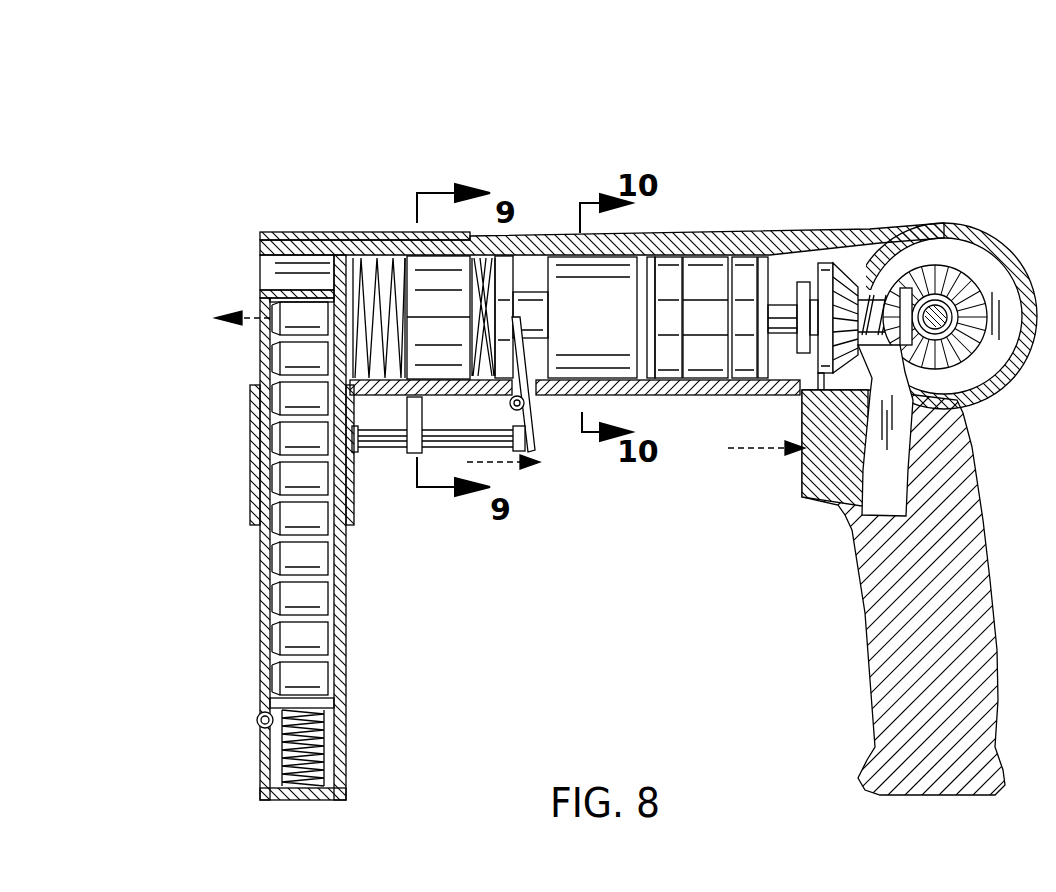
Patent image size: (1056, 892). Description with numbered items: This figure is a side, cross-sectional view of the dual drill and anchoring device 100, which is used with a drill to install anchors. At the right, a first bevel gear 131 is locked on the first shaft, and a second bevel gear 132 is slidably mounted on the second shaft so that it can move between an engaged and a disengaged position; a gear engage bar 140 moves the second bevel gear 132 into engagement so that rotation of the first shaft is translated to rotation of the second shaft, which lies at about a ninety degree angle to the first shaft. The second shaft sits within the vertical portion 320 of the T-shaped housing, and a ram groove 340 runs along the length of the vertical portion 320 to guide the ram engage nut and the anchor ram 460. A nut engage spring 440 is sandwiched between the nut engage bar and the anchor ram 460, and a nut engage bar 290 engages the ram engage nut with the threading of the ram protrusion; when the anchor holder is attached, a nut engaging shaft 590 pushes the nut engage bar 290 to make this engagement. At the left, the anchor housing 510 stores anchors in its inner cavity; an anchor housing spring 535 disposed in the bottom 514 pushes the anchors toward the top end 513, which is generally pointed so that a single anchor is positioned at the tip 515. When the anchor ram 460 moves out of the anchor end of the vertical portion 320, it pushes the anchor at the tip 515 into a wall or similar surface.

The dual drill and anchoring device 100 is at (870, 120).
The first bevel gear 131 is at (931, 278).
The second bevel gear 132 is at (847, 283).
The gear engage bar 140 is at (815, 365).
The nut engage bar 290 is at (533, 420).
The vertical portion 320 is at (695, 243).
The ram groove 340 is at (455, 318).
The nut engage spring 440 is at (497, 262).
The anchor ram 460 is at (395, 240).
The anchor housing 510 is at (262, 586).
The top end 513 is at (290, 292).
The bottom 514 is at (320, 800).
The tip 515 is at (258, 305).
The anchor housing spring 535 is at (325, 745).
The nut engaging shaft 590 is at (445, 445).